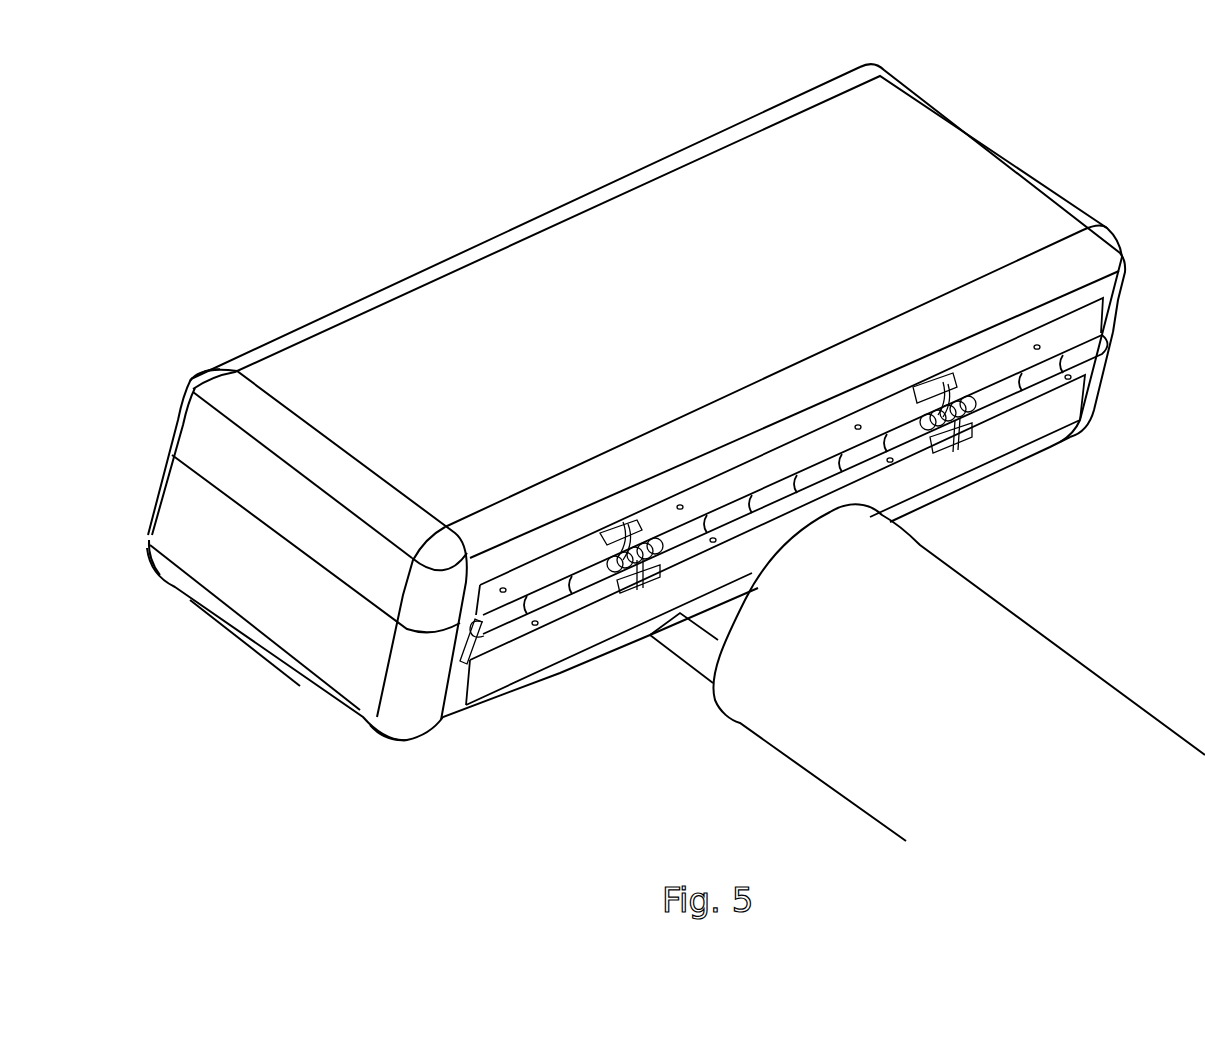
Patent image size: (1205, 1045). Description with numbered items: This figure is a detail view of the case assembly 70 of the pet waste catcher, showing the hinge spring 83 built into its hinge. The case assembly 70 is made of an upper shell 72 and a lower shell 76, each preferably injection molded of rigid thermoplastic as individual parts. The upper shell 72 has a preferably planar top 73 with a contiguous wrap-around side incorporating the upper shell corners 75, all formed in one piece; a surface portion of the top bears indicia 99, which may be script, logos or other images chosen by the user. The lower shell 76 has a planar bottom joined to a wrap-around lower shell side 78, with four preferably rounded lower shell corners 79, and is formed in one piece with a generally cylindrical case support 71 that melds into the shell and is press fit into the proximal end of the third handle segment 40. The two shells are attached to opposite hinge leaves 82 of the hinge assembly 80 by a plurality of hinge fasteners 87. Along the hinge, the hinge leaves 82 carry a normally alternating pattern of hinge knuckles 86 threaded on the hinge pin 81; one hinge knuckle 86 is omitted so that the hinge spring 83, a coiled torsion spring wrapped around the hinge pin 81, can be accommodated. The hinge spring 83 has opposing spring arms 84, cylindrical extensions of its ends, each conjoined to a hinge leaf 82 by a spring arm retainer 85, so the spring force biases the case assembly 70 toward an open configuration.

The third handle segment 40 is at (1027, 617).
The case assembly 70 is at (433, 204).
The case support 71 is at (690, 648).
The upper shell 72 is at (957, 120).
The top 73 is at (759, 155).
The upper shell corners 75 is at (191, 381).
The lower shell 76 is at (232, 618).
The lower shell side 78 is at (308, 632).
The lower shell corners 79 is at (148, 535).
The hinge assembly 80 is at (538, 652).
The hinge pin 81 is at (466, 665).
The hinge leaves 82 is at (1092, 323).
The hinge spring 83 is at (943, 440).
The spring arms 84 is at (606, 547).
The spring arm retainer 85 is at (950, 397).
The hinge knuckles 86 is at (1090, 349).
The hinge fasteners 87 is at (503, 587).
The indicia 99 is at (548, 328).